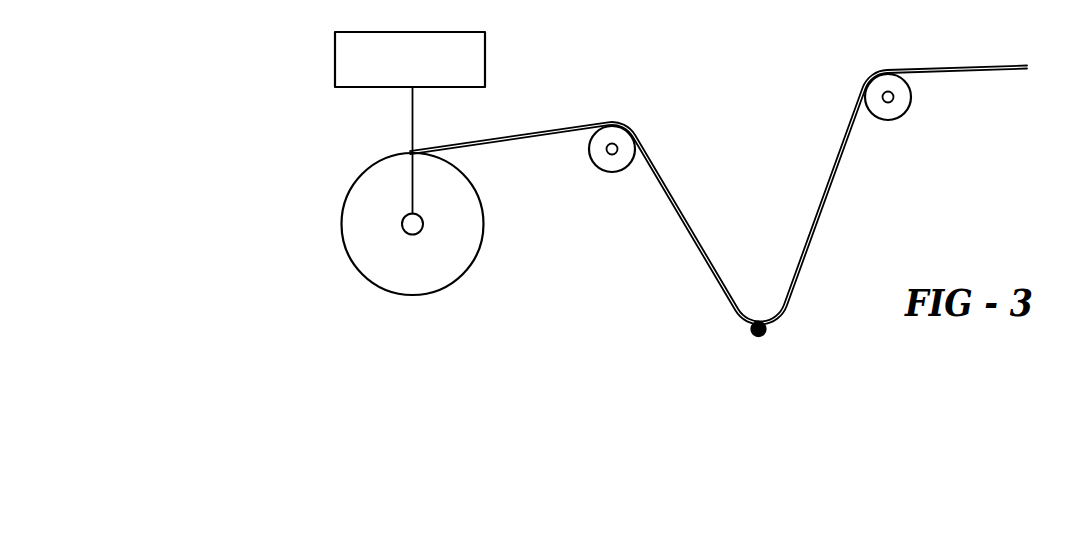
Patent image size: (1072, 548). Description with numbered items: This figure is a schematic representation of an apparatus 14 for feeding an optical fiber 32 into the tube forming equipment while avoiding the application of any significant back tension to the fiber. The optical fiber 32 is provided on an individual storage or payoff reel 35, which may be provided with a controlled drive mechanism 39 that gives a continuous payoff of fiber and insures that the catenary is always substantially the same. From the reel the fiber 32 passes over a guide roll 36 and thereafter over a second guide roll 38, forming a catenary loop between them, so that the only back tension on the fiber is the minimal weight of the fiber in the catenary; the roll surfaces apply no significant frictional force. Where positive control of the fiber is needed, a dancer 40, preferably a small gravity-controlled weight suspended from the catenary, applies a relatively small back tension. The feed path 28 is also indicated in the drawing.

The apparatus 14 is at (717, 239).
The web transport path 28 is at (769, 9).
The optical fiber 32 is at (1006, 73).
The payoff reel 35 is at (371, 259).
The guide roll 36 is at (589, 149).
The second guide roll 38 is at (905, 112).
The drive mechanism 39 is at (335, 52).
The dancer 40 is at (760, 337).